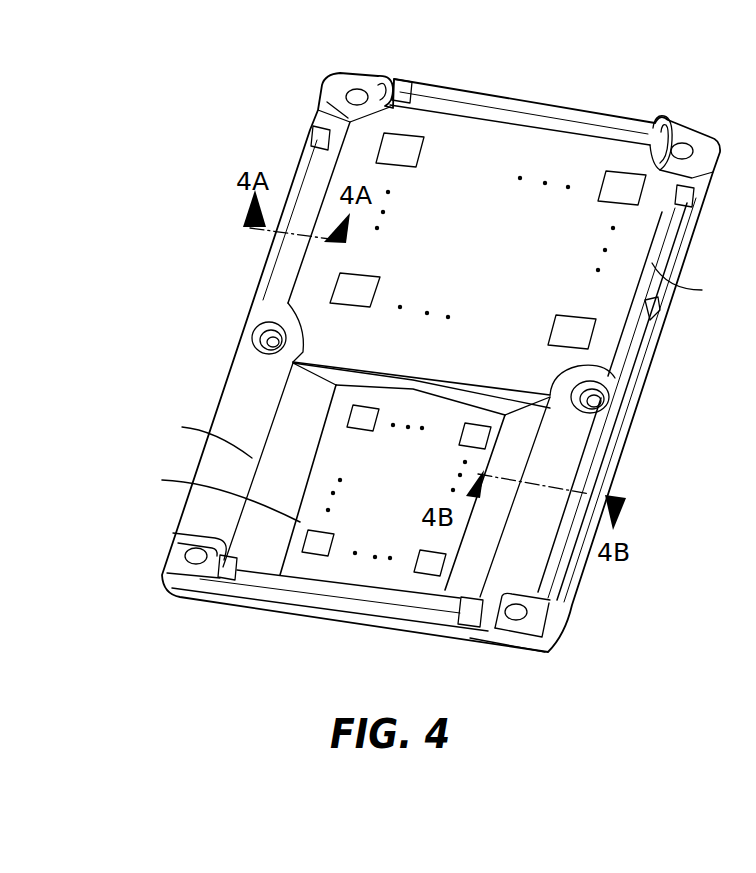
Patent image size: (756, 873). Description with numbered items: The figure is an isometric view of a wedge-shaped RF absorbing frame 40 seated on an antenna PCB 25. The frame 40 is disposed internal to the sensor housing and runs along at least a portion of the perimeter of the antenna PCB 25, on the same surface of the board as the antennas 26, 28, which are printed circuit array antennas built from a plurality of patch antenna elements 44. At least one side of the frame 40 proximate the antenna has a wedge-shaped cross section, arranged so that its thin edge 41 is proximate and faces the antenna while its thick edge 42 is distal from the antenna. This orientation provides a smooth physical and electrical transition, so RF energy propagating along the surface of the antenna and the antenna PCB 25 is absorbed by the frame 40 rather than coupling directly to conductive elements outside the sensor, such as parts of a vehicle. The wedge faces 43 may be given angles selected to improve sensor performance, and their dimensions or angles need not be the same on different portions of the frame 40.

The antenna PCB 25 is at (250, 598).
The antenna 26 is at (367, 492).
The antenna 28 is at (450, 212).
The wedge-shaped RF absorbing frame 40 is at (613, 100).
The thin edge 41 is at (497, 663).
The thick edge 42 is at (600, 597).
The wedge faces 43 is at (311, 205).
The patch antenna elements 44 is at (317, 554).